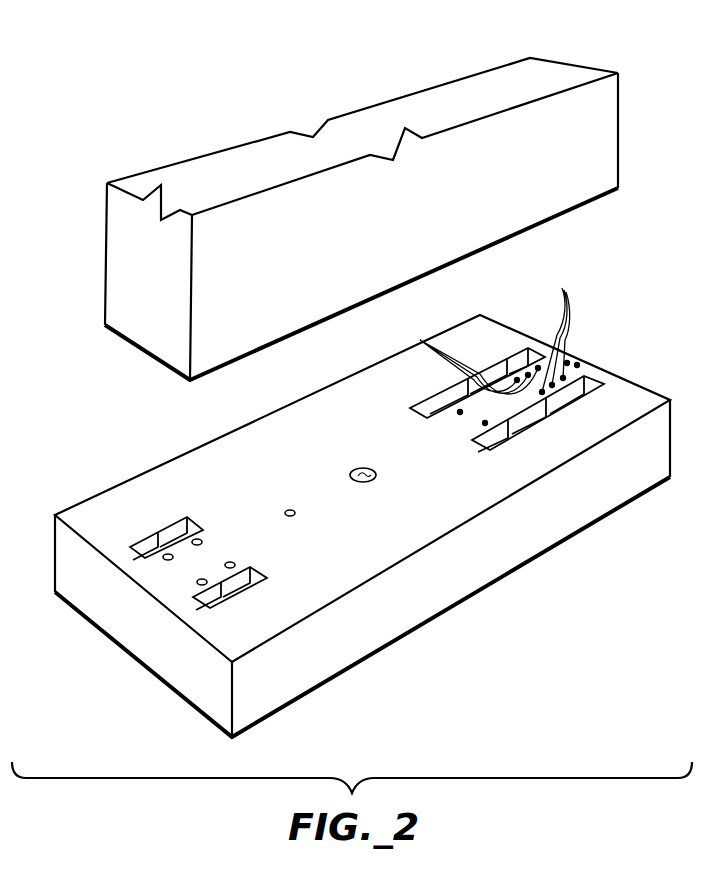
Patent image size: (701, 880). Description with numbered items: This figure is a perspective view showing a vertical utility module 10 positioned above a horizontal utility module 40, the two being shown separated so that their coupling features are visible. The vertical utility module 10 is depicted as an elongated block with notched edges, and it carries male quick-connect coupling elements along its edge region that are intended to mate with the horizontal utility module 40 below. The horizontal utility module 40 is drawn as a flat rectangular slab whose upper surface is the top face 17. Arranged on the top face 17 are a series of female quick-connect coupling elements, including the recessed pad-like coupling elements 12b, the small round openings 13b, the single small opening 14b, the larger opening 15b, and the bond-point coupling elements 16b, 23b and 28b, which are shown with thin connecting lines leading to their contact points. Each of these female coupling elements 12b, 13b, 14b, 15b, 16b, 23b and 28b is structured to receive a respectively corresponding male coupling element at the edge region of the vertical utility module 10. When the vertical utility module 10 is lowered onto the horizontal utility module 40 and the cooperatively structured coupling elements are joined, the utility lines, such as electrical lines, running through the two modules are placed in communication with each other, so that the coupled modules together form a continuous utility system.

The vertical utility module 10 is at (562, 164).
The female quick-connect coupling element 12b is at (177, 532).
The female quick-connect coupling element 13b is at (230, 562).
The female quick-connect coupling element 14b is at (294, 516).
The female quick-connect coupling element 15b is at (370, 482).
The female quick-connect coupling element 16b is at (485, 423).
The top face 17 is at (622, 400).
The female quick-connect coupling element 23b is at (420, 340).
The female quick-connect coupling element 28b is at (567, 363).
The horizontal utility module 40 is at (583, 306).